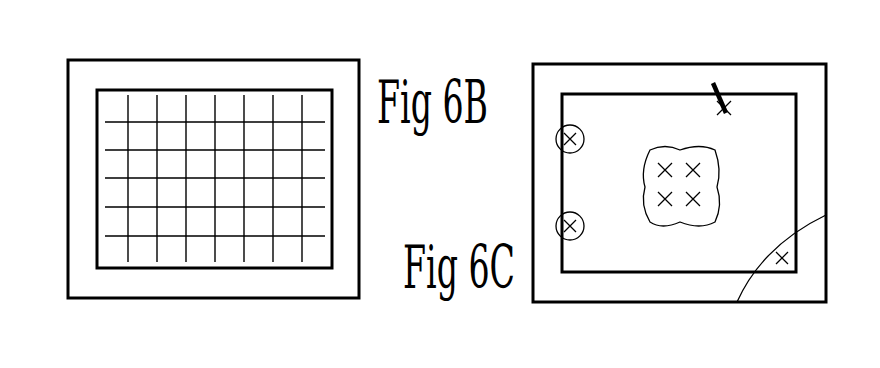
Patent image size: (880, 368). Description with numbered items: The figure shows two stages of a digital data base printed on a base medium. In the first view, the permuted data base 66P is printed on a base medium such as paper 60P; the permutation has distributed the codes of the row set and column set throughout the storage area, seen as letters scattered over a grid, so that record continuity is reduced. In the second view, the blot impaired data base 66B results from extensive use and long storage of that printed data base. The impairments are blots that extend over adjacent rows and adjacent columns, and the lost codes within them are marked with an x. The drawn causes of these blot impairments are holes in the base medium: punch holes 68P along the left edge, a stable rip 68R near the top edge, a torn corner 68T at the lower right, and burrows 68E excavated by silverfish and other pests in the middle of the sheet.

In FIG. 6B, the paper base medium 60P is at (67, 72).
In FIG. 6B, the permuted data base 66P is at (177, 85).
In FIG. 6C, the blot impaired data base 66B is at (651, 62).
In FIG. 6C, the stable rip 68R is at (720, 80).
In FIG. 6C, the punch holes 68P is at (557, 226).
In FIG. 6C, the burrows 68E is at (700, 153).
In FIG. 6C, the torn corner 68T is at (780, 290).